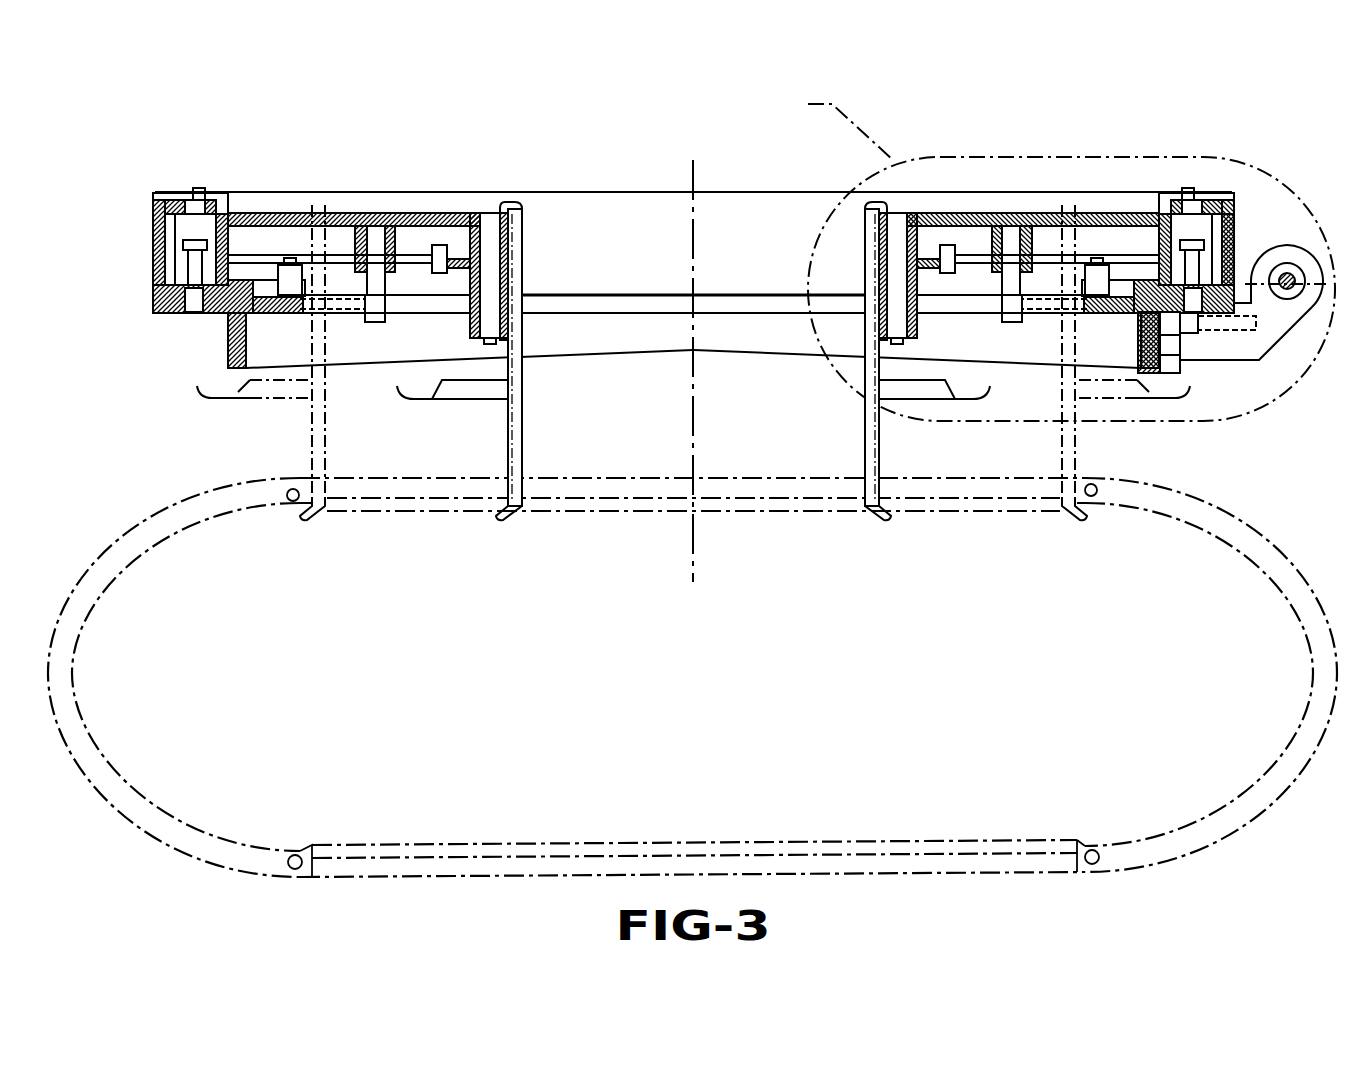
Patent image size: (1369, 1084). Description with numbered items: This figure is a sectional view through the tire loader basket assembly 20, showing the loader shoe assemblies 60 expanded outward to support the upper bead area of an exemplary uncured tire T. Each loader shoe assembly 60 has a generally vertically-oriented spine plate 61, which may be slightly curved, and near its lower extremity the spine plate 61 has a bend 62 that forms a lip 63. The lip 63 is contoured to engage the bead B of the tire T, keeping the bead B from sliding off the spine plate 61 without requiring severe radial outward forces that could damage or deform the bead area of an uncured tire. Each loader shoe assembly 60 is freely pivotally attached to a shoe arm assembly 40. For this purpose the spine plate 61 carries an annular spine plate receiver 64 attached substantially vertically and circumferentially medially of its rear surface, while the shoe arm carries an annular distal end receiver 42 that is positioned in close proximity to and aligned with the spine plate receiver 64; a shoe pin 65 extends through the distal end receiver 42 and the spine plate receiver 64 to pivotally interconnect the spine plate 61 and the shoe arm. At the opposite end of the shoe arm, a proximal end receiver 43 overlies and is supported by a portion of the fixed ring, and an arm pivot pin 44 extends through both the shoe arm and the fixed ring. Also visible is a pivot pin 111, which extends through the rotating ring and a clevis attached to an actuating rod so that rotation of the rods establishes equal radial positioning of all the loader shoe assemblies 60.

The tire loader basket assembly 20 is at (710, 358).
The shoe arm assembly 40 is at (1218, 186).
The distal end receiver 42 is at (880, 232).
The proximal end receiver 43 is at (140, 219).
The arm pivot pin 44 is at (192, 313).
The loader shoe assembly 60 is at (484, 348).
The spine plate 61 is at (528, 268).
The bend 62 is at (505, 512).
The lip 63 is at (470, 508).
The spine plate receiver 64 is at (849, 278).
The shoe pin 65 is at (900, 240).
The pivot pin 111 is at (1095, 272).
The bead B is at (1095, 500).
The tire T is at (1300, 617).